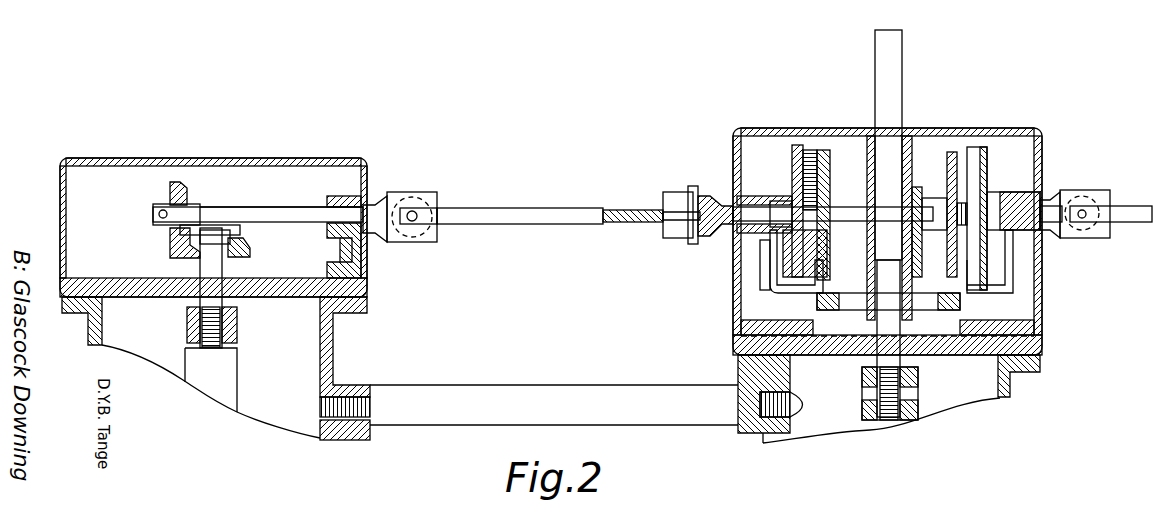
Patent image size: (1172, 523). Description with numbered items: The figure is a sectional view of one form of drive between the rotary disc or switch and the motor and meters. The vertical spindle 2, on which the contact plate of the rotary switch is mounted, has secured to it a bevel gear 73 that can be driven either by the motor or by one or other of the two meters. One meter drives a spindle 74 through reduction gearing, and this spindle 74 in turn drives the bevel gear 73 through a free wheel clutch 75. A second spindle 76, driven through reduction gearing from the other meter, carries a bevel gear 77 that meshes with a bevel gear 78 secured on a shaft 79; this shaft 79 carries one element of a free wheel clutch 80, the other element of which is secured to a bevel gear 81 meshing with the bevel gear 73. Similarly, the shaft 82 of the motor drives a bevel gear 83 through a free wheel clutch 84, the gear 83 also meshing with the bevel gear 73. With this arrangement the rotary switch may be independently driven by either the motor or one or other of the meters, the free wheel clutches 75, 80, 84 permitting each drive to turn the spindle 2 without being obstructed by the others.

The vertical spindle 2 is at (900, 57).
The bevel gear 73 is at (800, 288).
The spindle 74 is at (893, 358).
The free wheel clutch 75 is at (827, 307).
The spindle 76 is at (198, 298).
The bevel gear 77 is at (243, 253).
The bevel gear 78 is at (170, 189).
The shaft 79 is at (521, 208).
The free wheel clutch 80 is at (792, 147).
The bevel gear 81 is at (833, 150).
The motor shaft 82 is at (1128, 208).
The bevel gear 83 is at (950, 160).
The free wheel clutch 84 is at (993, 155).